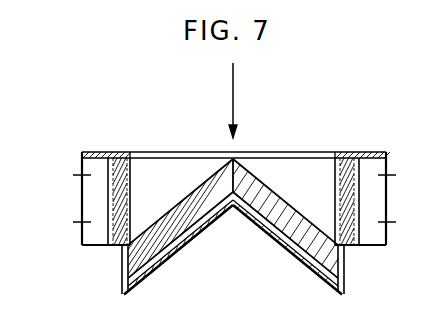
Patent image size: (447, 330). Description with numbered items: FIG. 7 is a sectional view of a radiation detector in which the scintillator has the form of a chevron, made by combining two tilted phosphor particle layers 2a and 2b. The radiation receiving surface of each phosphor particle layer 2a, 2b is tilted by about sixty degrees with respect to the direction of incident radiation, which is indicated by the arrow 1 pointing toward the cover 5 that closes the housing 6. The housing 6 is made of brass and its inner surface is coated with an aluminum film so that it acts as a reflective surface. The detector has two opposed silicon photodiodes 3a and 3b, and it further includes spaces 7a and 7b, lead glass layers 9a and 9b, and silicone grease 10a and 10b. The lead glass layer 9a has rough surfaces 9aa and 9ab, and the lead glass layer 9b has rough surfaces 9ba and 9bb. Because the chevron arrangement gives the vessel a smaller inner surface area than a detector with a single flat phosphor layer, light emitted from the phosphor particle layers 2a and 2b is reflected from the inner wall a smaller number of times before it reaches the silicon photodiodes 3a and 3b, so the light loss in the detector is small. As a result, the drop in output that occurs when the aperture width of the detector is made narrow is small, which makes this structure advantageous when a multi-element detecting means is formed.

The light incidence direction arrow 1 is at (233, 85).
The cover 5 is at (247, 152).
The space 7a is at (182, 177).
The space 7b is at (292, 172).
The silicon photodiode 3a is at (73, 222).
The silicon photodiode 3b is at (372, 197).
The silicone grease 10a is at (104, 244).
The silicone grease 10b is at (366, 246).
The rough surface 9ab is at (118, 151).
The rough surface 9aa is at (132, 164).
The rough surface 9ba is at (335, 165).
The rough surface 9bb is at (352, 152).
The phosphor particle layer 2a is at (187, 222).
The phosphor particle layer 2b is at (285, 225).
The housing 6 is at (160, 262).
The lead glass layer 9a is at (121, 250).
The lead glass layer 9b is at (345, 250).